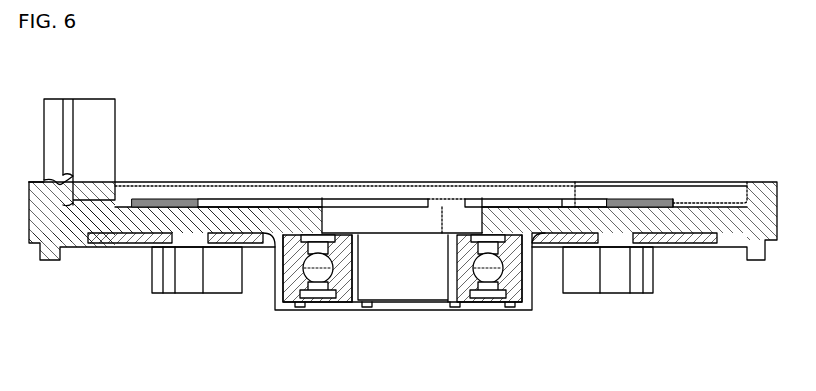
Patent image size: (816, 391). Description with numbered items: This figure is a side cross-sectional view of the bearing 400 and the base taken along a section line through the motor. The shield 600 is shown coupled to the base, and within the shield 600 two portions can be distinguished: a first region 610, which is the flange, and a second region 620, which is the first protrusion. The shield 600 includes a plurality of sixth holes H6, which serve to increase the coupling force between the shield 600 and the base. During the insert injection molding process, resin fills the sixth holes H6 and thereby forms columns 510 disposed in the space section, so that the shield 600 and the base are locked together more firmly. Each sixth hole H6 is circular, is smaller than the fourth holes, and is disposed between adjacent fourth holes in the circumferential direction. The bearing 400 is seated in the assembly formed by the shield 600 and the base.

The bearing 400 is at (340, 298).
The column 510 is at (197, 208).
The shield 600 is at (363, 305).
The first region 610 is at (112, 247).
The second region 620 is at (273, 288).
The sixth hole H6 is at (196, 237).